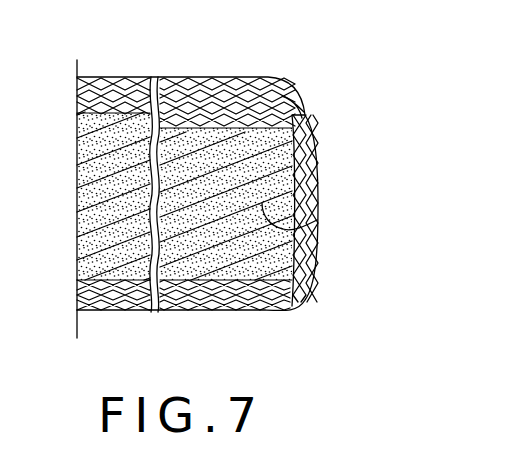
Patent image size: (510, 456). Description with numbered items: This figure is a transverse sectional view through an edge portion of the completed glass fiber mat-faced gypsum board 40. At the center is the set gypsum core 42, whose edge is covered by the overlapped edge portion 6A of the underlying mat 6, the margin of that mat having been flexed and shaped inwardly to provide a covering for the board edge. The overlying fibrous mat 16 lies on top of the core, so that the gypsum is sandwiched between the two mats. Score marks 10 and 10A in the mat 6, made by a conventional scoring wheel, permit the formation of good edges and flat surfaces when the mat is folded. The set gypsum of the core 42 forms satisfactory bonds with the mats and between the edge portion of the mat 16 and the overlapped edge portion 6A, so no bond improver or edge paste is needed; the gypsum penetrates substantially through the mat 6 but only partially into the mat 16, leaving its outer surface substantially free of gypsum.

The mat 6 is at (183, 309).
The overlapped edge portion 6A is at (184, 196).
The score mark 10 is at (312, 283).
The score mark 10A is at (302, 116).
The fibrous mat 16 is at (211, 77).
The board 40 is at (318, 185).
The set gypsum core 42 is at (317, 220).